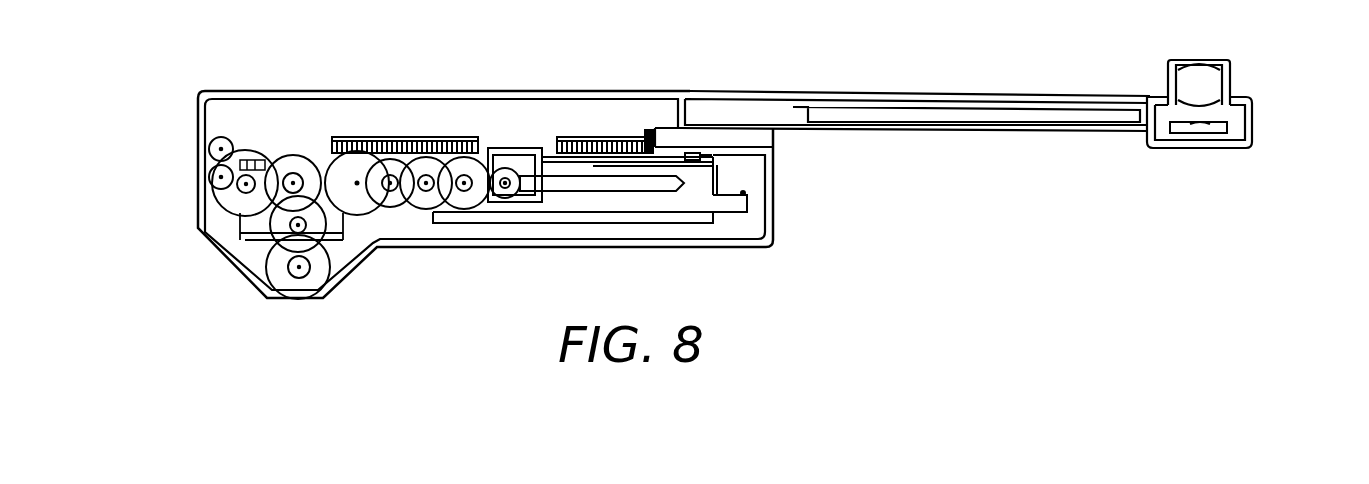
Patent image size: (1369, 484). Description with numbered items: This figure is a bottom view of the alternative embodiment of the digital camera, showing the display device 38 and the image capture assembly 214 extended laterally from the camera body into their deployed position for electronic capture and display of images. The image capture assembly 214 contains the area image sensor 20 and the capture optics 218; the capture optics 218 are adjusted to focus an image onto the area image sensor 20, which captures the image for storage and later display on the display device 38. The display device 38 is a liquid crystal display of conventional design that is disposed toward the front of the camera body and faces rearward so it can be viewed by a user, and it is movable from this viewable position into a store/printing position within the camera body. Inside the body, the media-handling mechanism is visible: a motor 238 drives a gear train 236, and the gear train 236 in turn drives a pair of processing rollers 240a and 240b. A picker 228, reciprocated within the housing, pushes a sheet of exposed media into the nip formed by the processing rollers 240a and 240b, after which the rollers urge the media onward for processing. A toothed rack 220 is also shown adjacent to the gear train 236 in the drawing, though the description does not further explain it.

The area image sensor 20 is at (1210, 128).
The display device 38 is at (952, 117).
The image capture assembly 214 is at (1232, 75).
The capture optics 218 is at (1201, 77).
The rack 220 is at (360, 137).
The picker 228 is at (715, 162).
The gear train 236 is at (397, 218).
The motor 238 is at (280, 278).
The processing roller 240a is at (214, 148).
The processing roller 240b is at (214, 181).